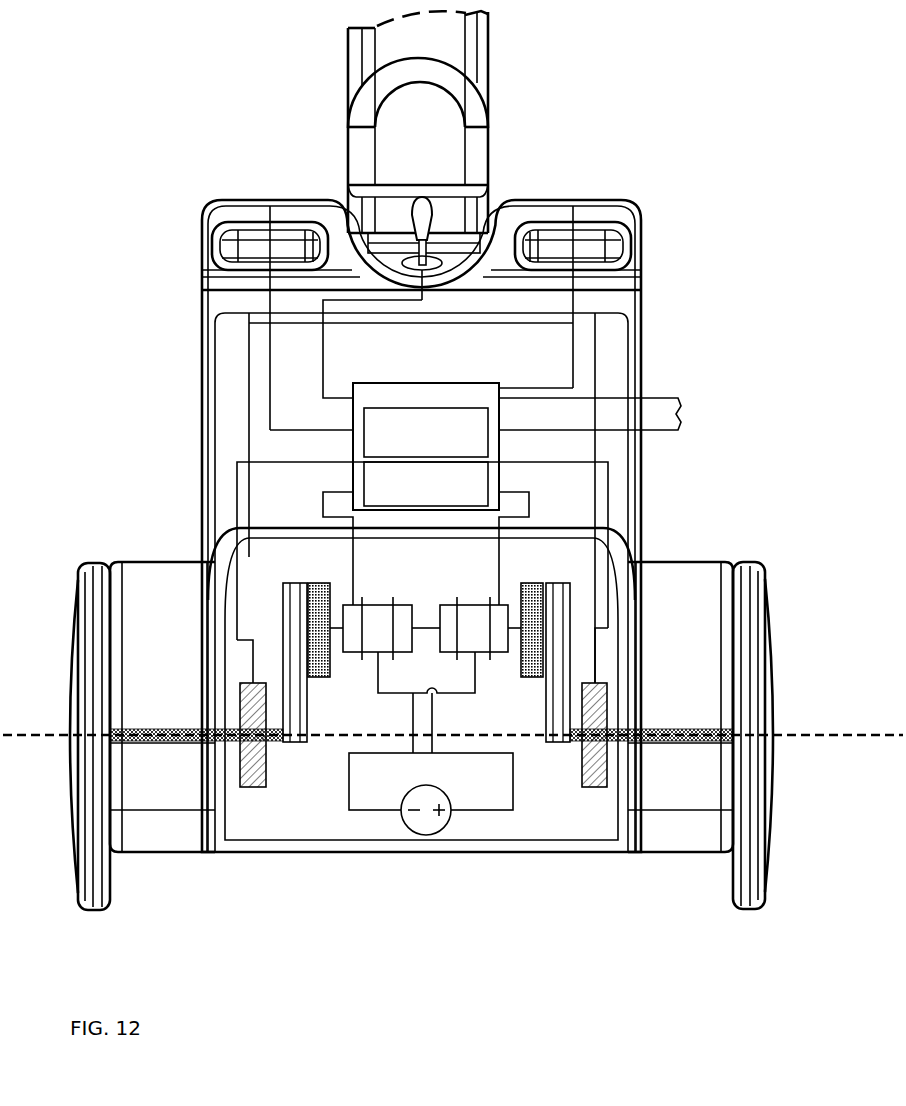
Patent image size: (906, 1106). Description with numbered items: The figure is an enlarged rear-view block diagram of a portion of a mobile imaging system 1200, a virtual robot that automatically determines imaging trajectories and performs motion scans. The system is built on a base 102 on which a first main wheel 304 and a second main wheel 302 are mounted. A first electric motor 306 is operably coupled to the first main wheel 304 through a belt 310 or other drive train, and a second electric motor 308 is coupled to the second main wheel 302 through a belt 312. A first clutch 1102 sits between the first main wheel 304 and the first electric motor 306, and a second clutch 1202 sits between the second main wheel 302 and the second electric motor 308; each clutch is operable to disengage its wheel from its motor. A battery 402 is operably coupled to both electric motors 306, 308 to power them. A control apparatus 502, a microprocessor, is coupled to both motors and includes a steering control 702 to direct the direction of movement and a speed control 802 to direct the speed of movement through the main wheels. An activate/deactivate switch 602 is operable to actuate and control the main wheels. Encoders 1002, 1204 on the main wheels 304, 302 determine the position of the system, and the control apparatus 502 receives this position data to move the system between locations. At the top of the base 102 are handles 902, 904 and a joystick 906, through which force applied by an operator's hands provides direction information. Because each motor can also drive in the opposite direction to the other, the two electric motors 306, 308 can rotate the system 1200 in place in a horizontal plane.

The base 102 is at (421, 431).
The second main wheel 302 is at (92, 563).
The first main wheel 304 is at (752, 560).
The first electric motor 306 is at (475, 605).
The second electric motor 308 is at (378, 605).
The belt 310 is at (546, 695).
The belt 312 is at (308, 695).
The battery 402 is at (450, 820).
The control apparatus 502 is at (462, 383).
The activate/deactivate switch 602 is at (660, 398).
The steering control 702 is at (426, 432).
The speed control 802 is at (426, 484).
The handle 902 is at (268, 200).
The handle 904 is at (575, 200).
The joystick 906 is at (437, 205).
The encoder 1002 is at (595, 787).
The first clutch 1102 is at (527, 583).
The second clutch 1202 is at (318, 583).
The encoder 1204 is at (253, 787).
The mobile imaging system 1200 is at (655, 976).